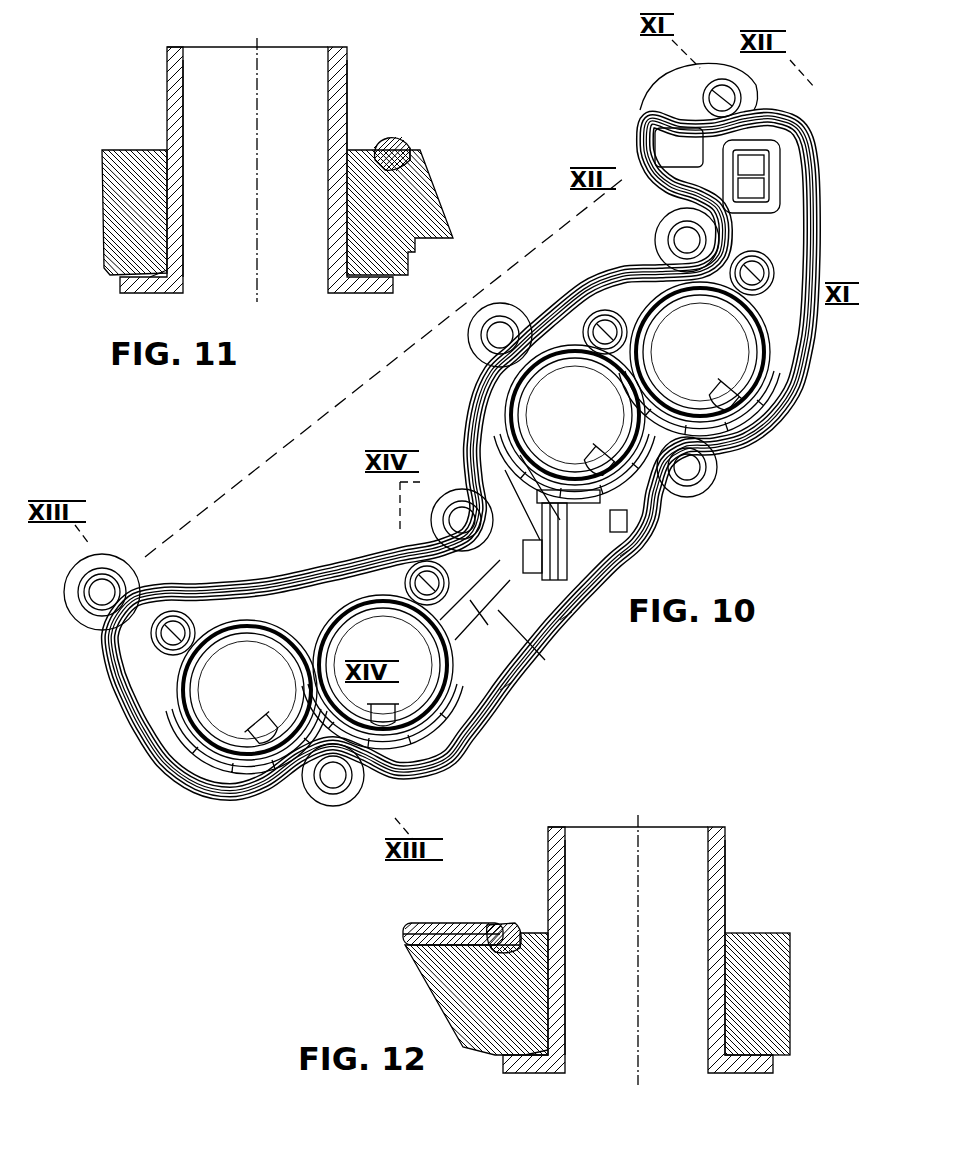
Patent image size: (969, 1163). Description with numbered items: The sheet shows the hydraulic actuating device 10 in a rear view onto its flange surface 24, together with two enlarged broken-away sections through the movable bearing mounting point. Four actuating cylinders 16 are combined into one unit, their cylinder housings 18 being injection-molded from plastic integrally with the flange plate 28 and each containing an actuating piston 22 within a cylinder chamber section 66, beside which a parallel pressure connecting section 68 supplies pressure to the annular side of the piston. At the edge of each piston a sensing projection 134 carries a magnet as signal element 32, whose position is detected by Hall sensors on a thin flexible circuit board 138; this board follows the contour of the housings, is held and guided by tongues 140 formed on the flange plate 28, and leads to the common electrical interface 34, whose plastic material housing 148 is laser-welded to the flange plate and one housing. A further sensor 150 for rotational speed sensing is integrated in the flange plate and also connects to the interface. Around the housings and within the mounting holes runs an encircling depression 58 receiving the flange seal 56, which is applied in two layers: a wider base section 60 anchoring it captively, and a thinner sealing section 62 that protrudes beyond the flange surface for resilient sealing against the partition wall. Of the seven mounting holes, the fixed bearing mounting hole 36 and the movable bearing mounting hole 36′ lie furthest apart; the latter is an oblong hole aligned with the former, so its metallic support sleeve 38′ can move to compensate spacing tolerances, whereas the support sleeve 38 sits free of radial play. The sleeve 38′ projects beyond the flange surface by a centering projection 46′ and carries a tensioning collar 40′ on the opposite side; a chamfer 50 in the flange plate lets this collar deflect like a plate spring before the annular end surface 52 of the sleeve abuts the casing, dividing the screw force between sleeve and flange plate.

In FIG. 11, the hydraulic actuating device 10 is at (126, 142).
In FIG. 12, the hydraulic actuating device 10 is at (770, 918).
In FIG. 10, the hydraulic actuating device 10 is at (290, 578).
In FIG. 10, the actuating cylinder 16 is at (650, 267).
In FIG. 10, the cylinder housing 18 is at (530, 326).
In FIG. 10, the actuating piston 22 is at (473, 521).
In FIG. 11, the flange surface 24 is at (360, 148).
In FIG. 12, the flange surface 24 is at (527, 932).
In FIG. 10, the flange surface 24 is at (762, 115).
In FIG. 11, the flange plate 28 is at (115, 250).
In FIG. 12, the flange plate 28 is at (772, 948).
In FIG. 10, the flange plate 28 is at (500, 557).
In FIG. 10, the signal element 32 is at (712, 393).
In FIG. 10, the electrical interface 34 is at (575, 535).
In FIG. 10, the fixed bearing mounting hole 36 is at (104, 572).
In FIG. 11, the movable bearing mounting hole 36′ is at (183, 185).
In FIG. 12, the movable bearing mounting hole 36′ is at (552, 986).
In FIG. 10, the movable bearing mounting hole 36′ is at (722, 90).
In FIG. 10, the support sleeve 38 is at (90, 610).
In FIG. 11, the support sleeve 38′ is at (255, 72).
In FIG. 12, the support sleeve 38′ is at (636, 851).
In FIG. 10, the support sleeve 38′ is at (703, 98).
In FIG. 11, the tensioning collar 40′ is at (365, 293).
In FIG. 12, the tensioning collar 40′ is at (525, 1075).
In FIG. 11, the centering projection 46′ is at (347, 92).
In FIG. 12, the centering projection 46′ is at (722, 870).
In FIG. 11, the chamfer 50 is at (182, 277).
In FIG. 12, the chamfer 50 is at (560, 1052).
In FIG. 11, the annular end surface 52 is at (170, 40).
In FIG. 12, the annular end surface 52 is at (555, 827).
In FIG. 10, the annular end surface 52 is at (712, 80).
In FIG. 11, the flange seal 56 is at (393, 140).
In FIG. 12, the flange seal 56 is at (434, 926).
In FIG. 10, the flange seal 56 is at (532, 662).
In FIG. 11, the depression 58 is at (412, 160).
In FIG. 12, the depression 58 is at (468, 936).
In FIG. 10, the depression 58 is at (610, 548).
In FIG. 11, the base section 60 is at (405, 185).
In FIG. 12, the base section 60 is at (418, 937).
In FIG. 11, the sealing section 62 is at (396, 146).
In FIG. 12, the sealing section 62 is at (482, 930).
In FIG. 10, the cylinder chamber section 66 is at (740, 380).
In FIG. 10, the pressure connecting section 68 is at (798, 216).
In FIG. 10, the sensing projection 134 is at (748, 436).
In FIG. 10, the flexible circuit board 138 is at (492, 722).
In FIG. 10, the tongue 140 is at (808, 285).
In FIG. 10, the plastic material housing 148 is at (586, 575).
In FIG. 10, the sensor 150 is at (660, 146).